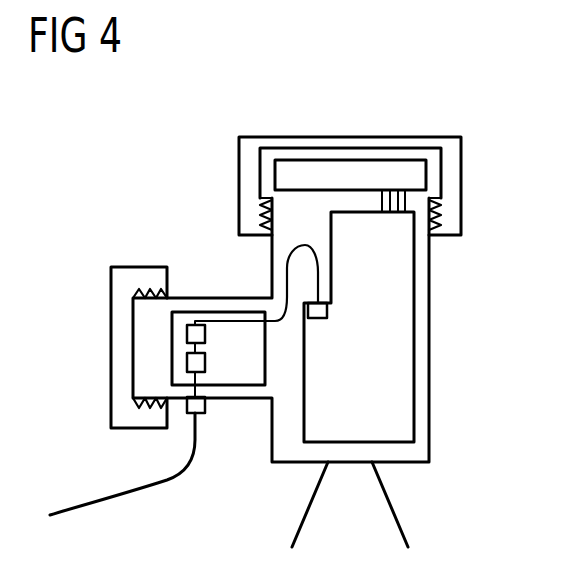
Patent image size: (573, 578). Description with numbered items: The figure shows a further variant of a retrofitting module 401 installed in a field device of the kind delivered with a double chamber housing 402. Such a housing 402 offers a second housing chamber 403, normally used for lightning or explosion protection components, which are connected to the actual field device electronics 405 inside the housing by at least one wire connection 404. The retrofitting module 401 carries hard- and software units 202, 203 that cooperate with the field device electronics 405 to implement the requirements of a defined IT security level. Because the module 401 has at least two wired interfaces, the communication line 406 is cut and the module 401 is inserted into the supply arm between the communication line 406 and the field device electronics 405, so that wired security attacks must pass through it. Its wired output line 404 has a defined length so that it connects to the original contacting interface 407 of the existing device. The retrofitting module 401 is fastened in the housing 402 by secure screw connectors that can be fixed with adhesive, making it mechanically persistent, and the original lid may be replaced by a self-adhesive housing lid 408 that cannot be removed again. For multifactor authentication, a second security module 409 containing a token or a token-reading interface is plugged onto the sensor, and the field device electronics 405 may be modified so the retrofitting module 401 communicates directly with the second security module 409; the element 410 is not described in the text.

The hardware unit 202 is at (188, 330).
The software unit 203 is at (188, 362).
The retrofitting module 401 is at (217, 312).
The double chamber housing 402 is at (432, 295).
The second housing chamber 403 is at (138, 267).
The wired output line 404 is at (318, 272).
The field device electronics 405 is at (418, 373).
The communication line 406 is at (160, 487).
The contacting interface 407 is at (318, 320).
The housing lid 408 is at (137, 428).
The second security module 409 is at (347, 160).
The cover cap 410 is at (423, 137).